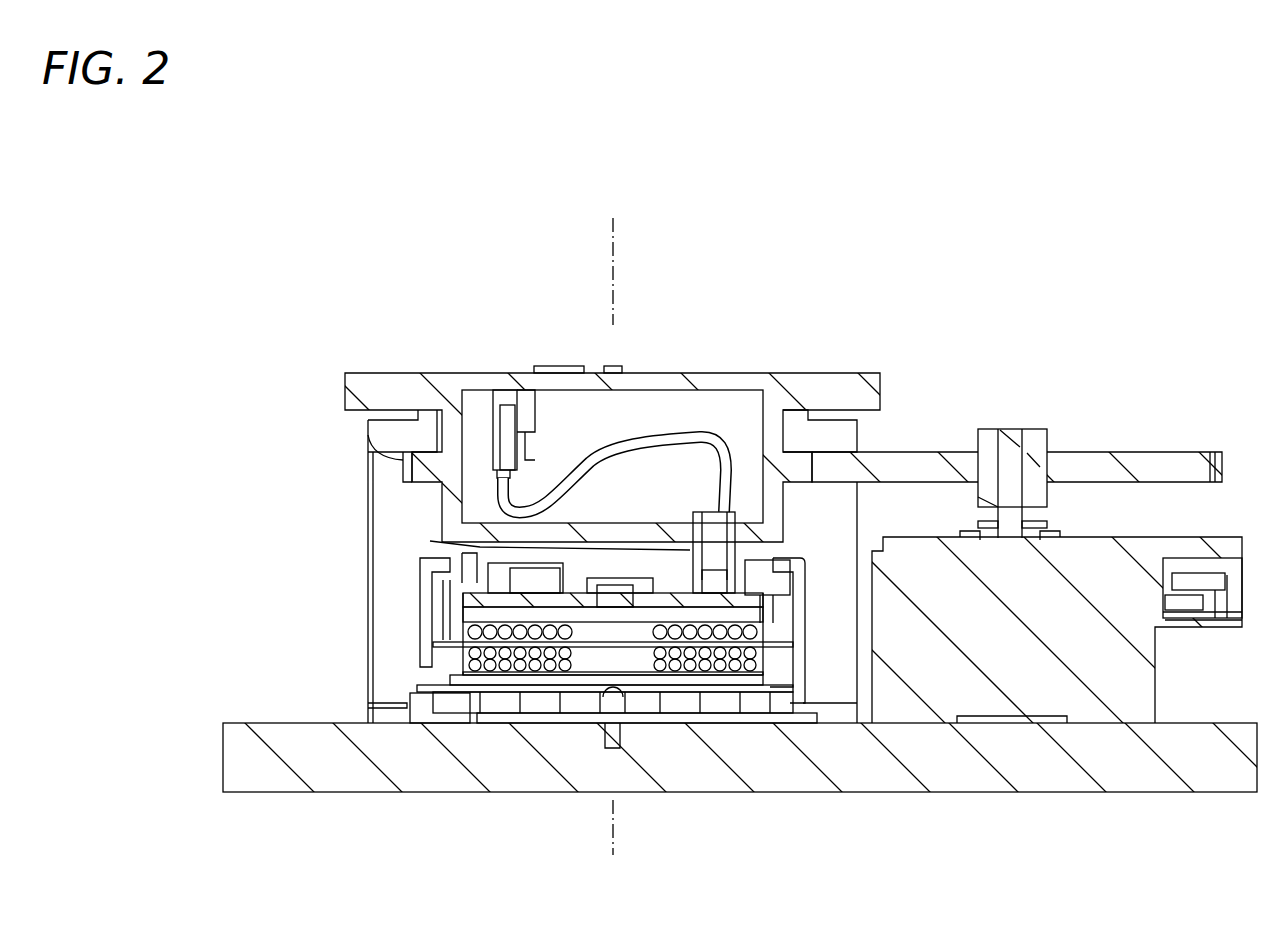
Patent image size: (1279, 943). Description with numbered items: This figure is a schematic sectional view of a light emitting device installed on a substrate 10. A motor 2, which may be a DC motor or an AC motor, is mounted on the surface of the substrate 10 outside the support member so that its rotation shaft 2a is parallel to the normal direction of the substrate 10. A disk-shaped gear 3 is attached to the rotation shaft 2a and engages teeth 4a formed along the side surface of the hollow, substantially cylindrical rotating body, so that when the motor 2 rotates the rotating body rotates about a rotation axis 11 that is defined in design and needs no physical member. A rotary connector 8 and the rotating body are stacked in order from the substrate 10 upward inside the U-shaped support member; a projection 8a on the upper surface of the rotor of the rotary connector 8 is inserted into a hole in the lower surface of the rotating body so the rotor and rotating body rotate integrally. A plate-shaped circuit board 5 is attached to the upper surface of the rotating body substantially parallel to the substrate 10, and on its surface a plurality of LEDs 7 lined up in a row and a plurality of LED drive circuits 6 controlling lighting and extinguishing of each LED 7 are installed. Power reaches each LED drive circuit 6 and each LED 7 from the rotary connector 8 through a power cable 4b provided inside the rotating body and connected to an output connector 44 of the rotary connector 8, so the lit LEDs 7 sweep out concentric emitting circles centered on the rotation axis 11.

The motor 2 is at (1137, 695).
The rotation shaft 2a is at (1012, 440).
The gear 3 is at (1080, 452).
The teeth 4a is at (803, 460).
The power cable 4b is at (718, 438).
The circuit board 5 is at (398, 373).
The LED drive circuit 6 is at (557, 366).
The LED 7 is at (613, 366).
The rotary connector 8 is at (425, 622).
The projection 8a is at (480, 546).
The substrate 10 is at (1224, 778).
The rotation axis 11 is at (613, 252).
The output connector 44 is at (767, 560).